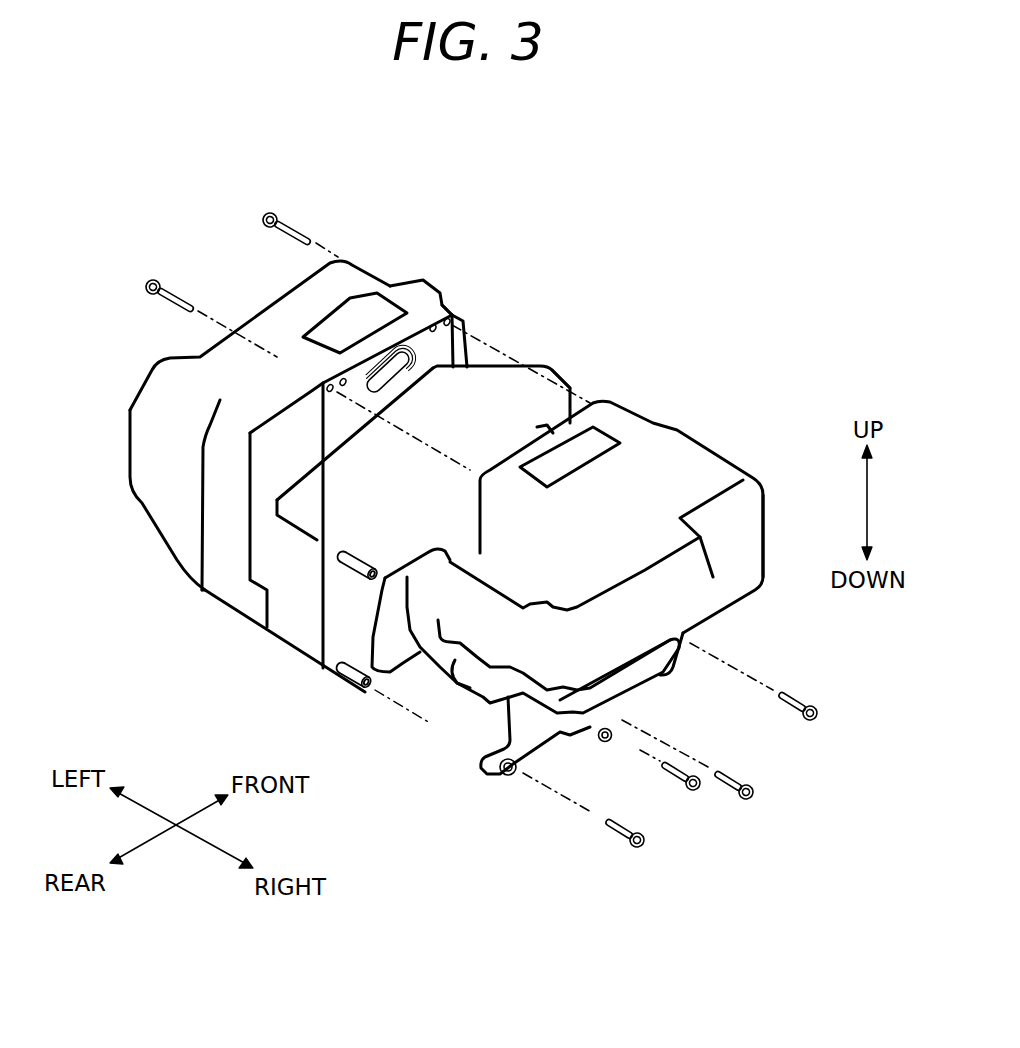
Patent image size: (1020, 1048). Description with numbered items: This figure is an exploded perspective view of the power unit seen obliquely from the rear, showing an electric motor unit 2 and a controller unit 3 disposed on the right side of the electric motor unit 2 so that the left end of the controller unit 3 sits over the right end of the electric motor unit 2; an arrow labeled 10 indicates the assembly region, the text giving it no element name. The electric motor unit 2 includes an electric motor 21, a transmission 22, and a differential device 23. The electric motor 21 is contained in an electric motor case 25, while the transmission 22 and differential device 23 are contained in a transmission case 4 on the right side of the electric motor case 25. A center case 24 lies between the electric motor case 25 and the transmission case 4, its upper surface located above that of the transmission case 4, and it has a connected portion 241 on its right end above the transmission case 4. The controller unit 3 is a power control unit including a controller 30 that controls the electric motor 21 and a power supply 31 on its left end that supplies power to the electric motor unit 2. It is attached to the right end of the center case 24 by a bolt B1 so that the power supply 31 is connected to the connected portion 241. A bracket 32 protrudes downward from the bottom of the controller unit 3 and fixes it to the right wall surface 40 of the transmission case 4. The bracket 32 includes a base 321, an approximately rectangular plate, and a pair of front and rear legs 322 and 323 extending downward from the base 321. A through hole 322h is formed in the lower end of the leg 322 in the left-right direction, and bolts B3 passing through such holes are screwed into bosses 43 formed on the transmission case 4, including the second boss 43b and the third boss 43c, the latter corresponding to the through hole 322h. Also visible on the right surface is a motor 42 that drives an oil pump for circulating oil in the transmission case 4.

The electric motor unit 2 is at (528, 240).
The electric component unit 10 is at (636, 279).
The electric motor 21 is at (283, 327).
The transmission 22 is at (297, 587).
The differential device 23 is at (510, 390).
The center case 24 is at (407, 362).
The connected portion 241 is at (442, 315).
The electric motor case 25 is at (352, 282).
The controller unit 3 is at (670, 450).
The controller 30 is at (713, 473).
The power supply 31 is at (566, 420).
The bracket 32 is at (570, 732).
The base 321 is at (660, 675).
The leg 322 is at (497, 750).
The through hole 322h is at (508, 776).
The leg 323 is at (605, 742).
The transmission case 4 is at (541, 387).
The right wall surface 40 is at (400, 640).
The motor 42 is at (363, 627).
The bosses 43 is at (325, 644).
The second boss 43b is at (357, 570).
The third boss 43c is at (347, 688).
The bolt B1 is at (270, 214).
The bolts B3 is at (827, 718).